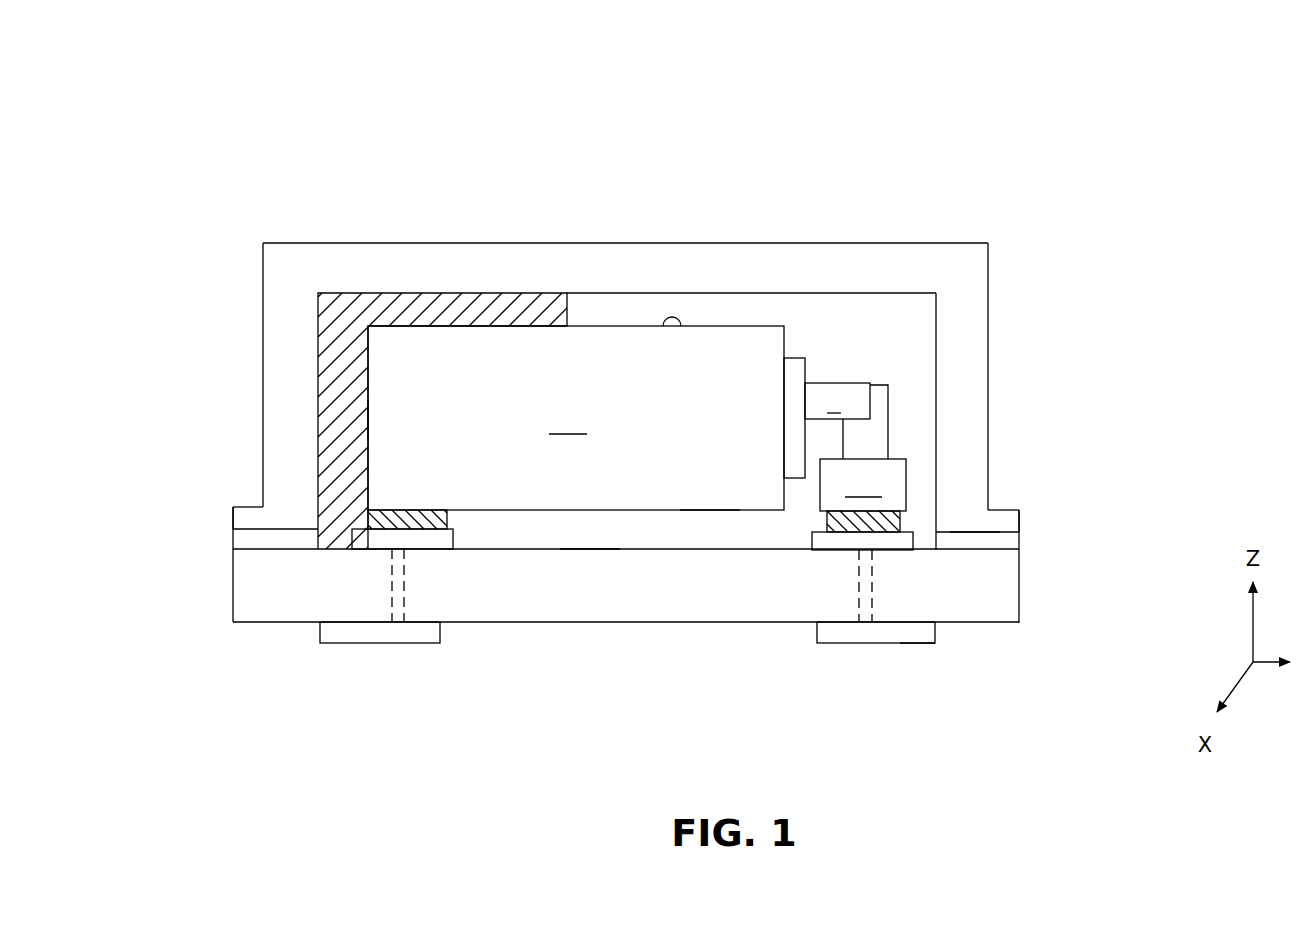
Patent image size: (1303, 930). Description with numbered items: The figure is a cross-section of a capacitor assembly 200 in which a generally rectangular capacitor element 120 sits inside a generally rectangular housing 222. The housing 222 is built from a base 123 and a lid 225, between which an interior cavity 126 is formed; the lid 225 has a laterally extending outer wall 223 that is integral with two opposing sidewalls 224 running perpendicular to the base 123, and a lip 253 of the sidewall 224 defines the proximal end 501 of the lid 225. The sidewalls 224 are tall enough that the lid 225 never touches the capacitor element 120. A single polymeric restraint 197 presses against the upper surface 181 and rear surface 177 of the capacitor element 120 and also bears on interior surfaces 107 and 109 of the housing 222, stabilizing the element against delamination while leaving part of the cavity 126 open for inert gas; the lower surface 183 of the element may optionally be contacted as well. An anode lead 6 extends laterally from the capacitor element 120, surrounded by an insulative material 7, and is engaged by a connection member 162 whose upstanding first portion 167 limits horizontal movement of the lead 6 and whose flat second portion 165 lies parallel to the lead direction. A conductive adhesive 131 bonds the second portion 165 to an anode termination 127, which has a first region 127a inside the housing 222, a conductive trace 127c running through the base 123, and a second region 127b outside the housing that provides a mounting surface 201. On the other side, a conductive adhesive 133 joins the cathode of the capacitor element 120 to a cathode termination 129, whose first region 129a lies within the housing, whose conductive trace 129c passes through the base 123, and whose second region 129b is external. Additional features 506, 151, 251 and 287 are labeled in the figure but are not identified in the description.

The capacitor assembly 200 is at (1062, 200).
The outer lid 506 is at (639, 331).
The sidewall 224 is at (290, 400).
The outer wall 223 is at (655, 270).
The lid 225 is at (565, 268).
The interior cavity 126 is at (627, 364).
The interior surface 107 is at (330, 350).
The polymeric restraint 197 is at (455, 305).
The capacitor element 120 is at (576, 465).
The rear surface 177 is at (370, 416).
The upper surface 181 is at (677, 330).
The lower surface 183 is at (708, 512).
The conductive adhesive 133 is at (425, 515).
The cathode termination 129 is at (375, 628).
The first region 129a is at (358, 540).
The second region 129b is at (425, 645).
The conductive trace 129c is at (400, 586).
The insulative material 7 is at (793, 378).
The anode lead 6 is at (837, 401).
The first portion 167 is at (878, 413).
The second portion 165 is at (902, 454).
The connection member 162 is at (936, 419).
The conductive adhesive 131 is at (898, 518).
The anode termination 127 is at (845, 635).
The first region 127a is at (833, 540).
The second region 127b is at (833, 645).
The conductive trace 127c is at (865, 606).
The mounting surface 201 is at (920, 645).
The housing 222 is at (626, 561).
The base 123 is at (641, 601).
The substrate sidewall 151 is at (233, 607).
The lip 253 is at (248, 515).
The seal ring outer surface 251 is at (232, 515).
The seal layer 287 is at (240, 538).
The proximal end 501 is at (967, 535).
The interior surface 109 is at (600, 543).